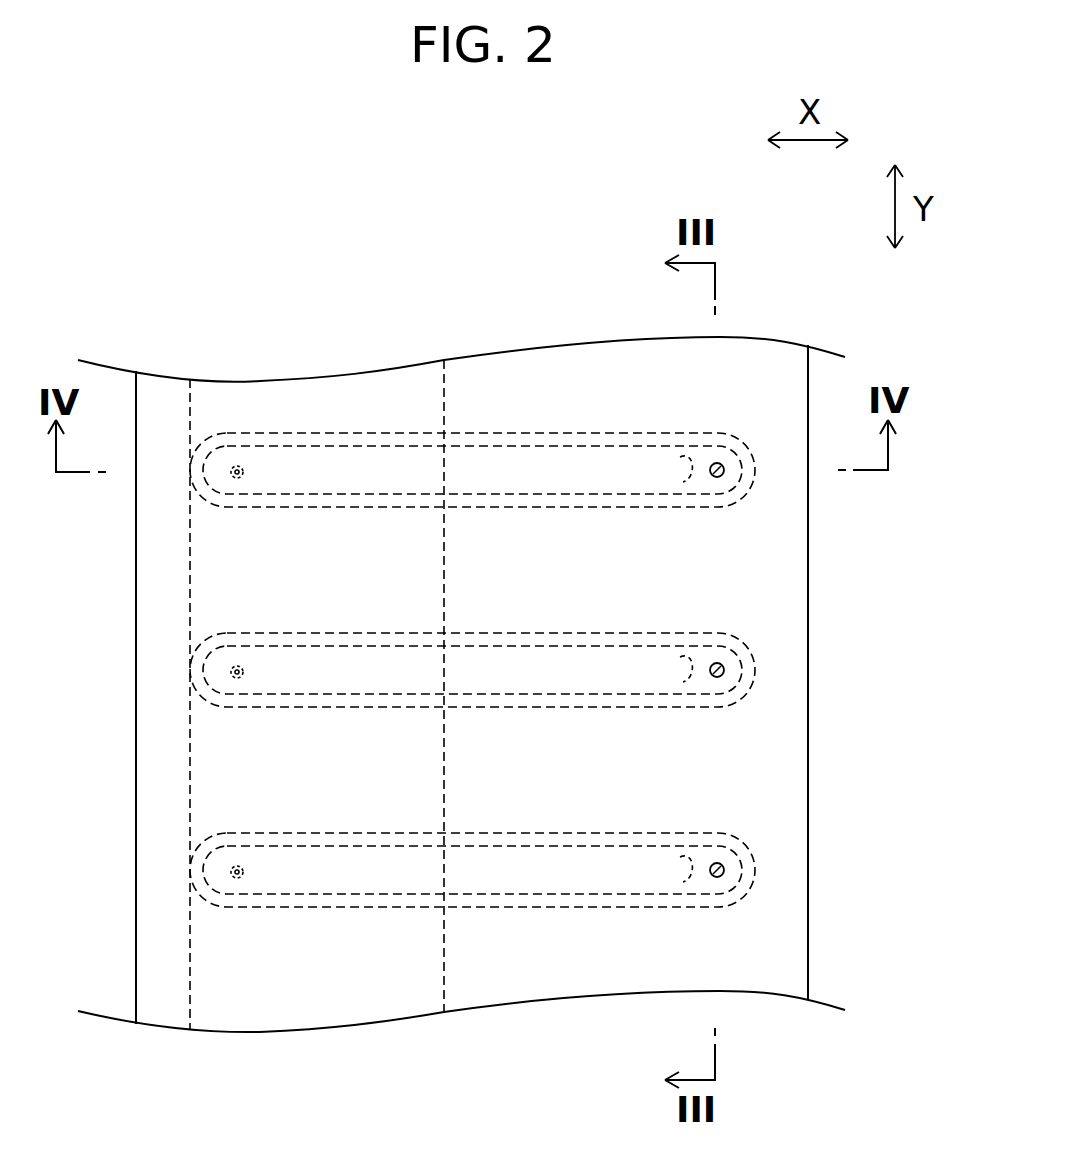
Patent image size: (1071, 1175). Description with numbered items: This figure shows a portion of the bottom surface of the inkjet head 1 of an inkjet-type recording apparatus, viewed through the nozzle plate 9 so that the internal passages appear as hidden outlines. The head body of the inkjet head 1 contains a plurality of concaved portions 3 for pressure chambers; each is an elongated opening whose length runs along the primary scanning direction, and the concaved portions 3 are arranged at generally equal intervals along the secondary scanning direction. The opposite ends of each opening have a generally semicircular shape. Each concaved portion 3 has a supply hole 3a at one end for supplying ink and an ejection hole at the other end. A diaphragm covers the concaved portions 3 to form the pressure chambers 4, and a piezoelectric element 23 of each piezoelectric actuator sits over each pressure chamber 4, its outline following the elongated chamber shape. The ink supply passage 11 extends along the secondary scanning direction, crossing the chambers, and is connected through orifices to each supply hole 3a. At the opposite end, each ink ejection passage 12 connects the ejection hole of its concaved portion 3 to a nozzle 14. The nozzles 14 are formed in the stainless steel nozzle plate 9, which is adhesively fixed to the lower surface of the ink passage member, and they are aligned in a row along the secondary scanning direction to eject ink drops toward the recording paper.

The inkjet head 1 is at (186, 218).
The concaved portion 3 is at (405, 495).
The supply hole 3a is at (237, 478).
The pressure chamber 4 is at (553, 440).
The nozzle plate 9 is at (148, 924).
The ink supply passage 11 is at (444, 395).
The ink ejection passage 12 is at (683, 482).
The nozzle 14 is at (717, 477).
The piezoelectric element 23 is at (325, 440).